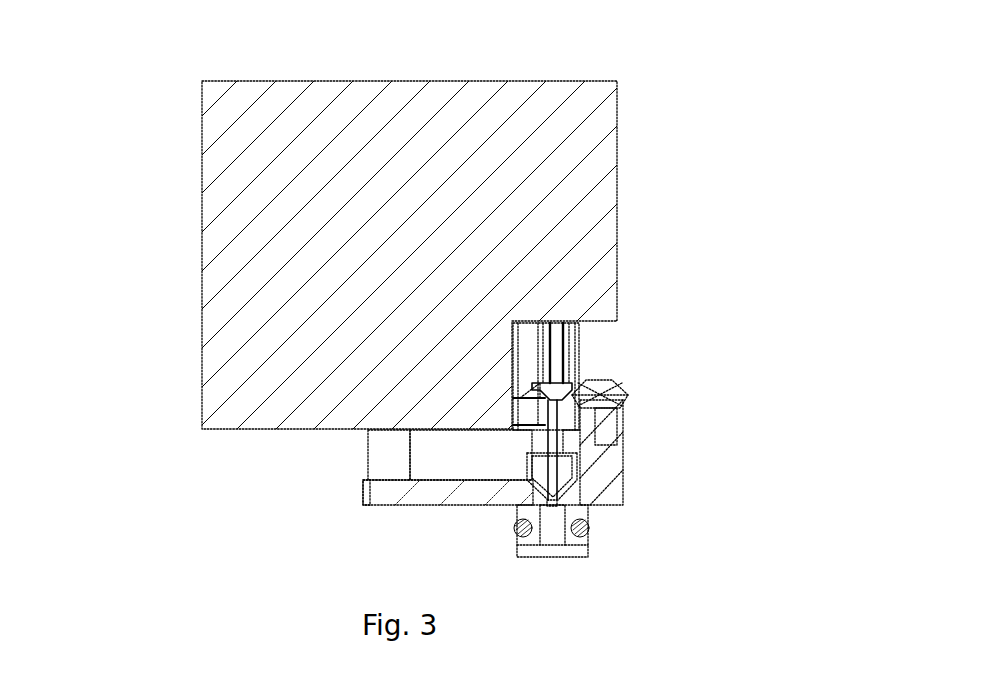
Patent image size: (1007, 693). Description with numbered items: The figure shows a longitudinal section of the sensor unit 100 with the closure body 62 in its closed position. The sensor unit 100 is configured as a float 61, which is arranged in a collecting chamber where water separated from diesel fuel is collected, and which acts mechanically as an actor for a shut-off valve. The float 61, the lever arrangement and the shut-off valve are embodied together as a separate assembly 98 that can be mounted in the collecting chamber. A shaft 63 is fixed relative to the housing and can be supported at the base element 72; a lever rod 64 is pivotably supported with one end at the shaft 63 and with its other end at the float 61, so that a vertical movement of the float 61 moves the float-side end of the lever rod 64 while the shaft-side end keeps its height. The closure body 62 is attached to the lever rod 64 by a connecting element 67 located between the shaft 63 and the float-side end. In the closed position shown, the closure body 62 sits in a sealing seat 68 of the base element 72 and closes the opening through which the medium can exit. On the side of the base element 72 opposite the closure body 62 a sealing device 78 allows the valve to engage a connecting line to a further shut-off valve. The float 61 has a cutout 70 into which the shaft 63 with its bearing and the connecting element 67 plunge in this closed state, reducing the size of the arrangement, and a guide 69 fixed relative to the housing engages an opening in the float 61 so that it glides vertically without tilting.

The sensor unit 100 is at (200, 113).
The assembly 98 is at (694, 119).
The float 61 is at (399, 227).
The lever rod 64 is at (519, 397).
The cutout 70 is at (516, 361).
The shaft 63 is at (598, 408).
The connecting element 67 is at (542, 449).
The sealing seat 68 is at (575, 488).
The closure body 62 is at (545, 488).
The sealing device 78 is at (558, 546).
The guide 69 is at (372, 453).
The base element 72 is at (400, 517).